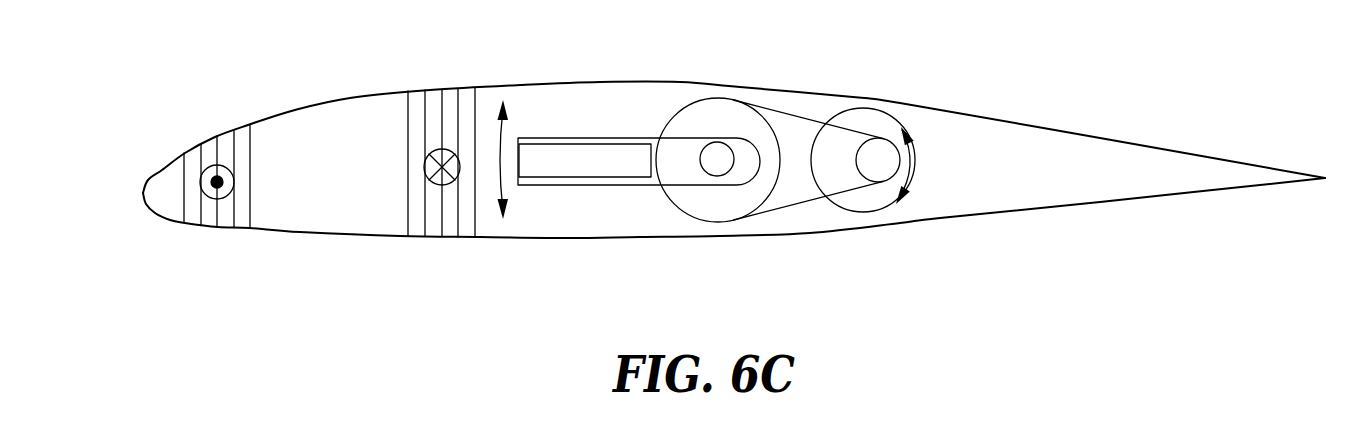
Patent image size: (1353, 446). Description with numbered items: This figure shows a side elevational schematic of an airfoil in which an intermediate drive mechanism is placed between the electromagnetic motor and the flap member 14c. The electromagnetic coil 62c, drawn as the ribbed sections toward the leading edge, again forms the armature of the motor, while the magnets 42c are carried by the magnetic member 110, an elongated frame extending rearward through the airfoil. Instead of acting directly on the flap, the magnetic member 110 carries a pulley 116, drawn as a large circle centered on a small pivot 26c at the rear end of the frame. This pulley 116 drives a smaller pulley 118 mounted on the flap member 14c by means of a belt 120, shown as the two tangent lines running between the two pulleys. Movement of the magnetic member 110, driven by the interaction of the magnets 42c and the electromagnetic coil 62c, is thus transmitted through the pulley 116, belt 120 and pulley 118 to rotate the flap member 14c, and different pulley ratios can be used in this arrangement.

The flap member 14c is at (1015, 148).
The electromagnetic coil 62c is at (407, 130).
The magnets 42c is at (587, 153).
The magnetic member 110 is at (670, 167).
The pivot pin 26c is at (720, 157).
The pulley 116 is at (728, 207).
The pulley 118 is at (880, 177).
The belt 120 is at (848, 128).